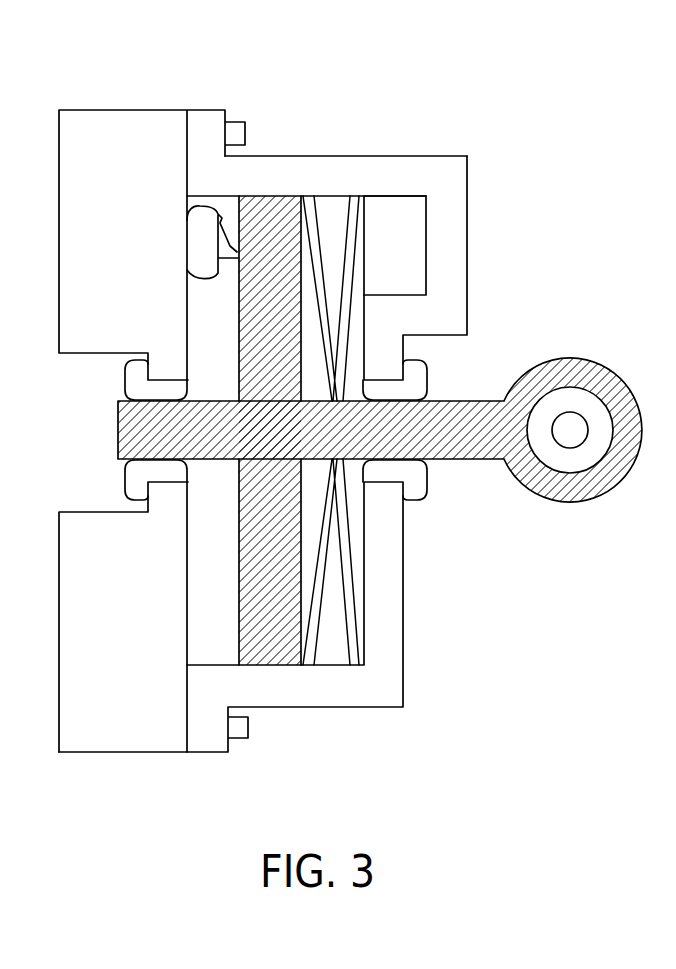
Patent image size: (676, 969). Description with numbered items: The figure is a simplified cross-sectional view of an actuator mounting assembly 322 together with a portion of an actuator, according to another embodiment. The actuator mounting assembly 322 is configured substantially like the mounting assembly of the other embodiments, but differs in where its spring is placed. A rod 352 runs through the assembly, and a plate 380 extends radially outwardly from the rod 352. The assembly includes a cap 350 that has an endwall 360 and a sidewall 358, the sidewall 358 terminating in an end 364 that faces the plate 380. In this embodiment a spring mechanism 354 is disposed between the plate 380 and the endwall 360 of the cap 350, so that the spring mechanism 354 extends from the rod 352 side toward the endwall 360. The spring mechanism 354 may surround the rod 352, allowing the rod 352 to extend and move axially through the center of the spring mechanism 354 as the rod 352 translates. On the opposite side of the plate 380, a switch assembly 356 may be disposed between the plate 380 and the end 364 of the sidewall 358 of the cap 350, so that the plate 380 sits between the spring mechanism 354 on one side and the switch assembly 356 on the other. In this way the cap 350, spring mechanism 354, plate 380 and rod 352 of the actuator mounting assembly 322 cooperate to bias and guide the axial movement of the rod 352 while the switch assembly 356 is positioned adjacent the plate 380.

The actuator mounting assembly 322 is at (478, 128).
The cap 350 is at (418, 156).
The rod 352 is at (466, 459).
The spring mechanism 354 is at (335, 203).
The switch assembly 356 is at (192, 238).
The sidewall 358 is at (253, 172).
The endwall 360 is at (457, 246).
The end 364 is at (193, 153).
The plate 380 is at (282, 205).